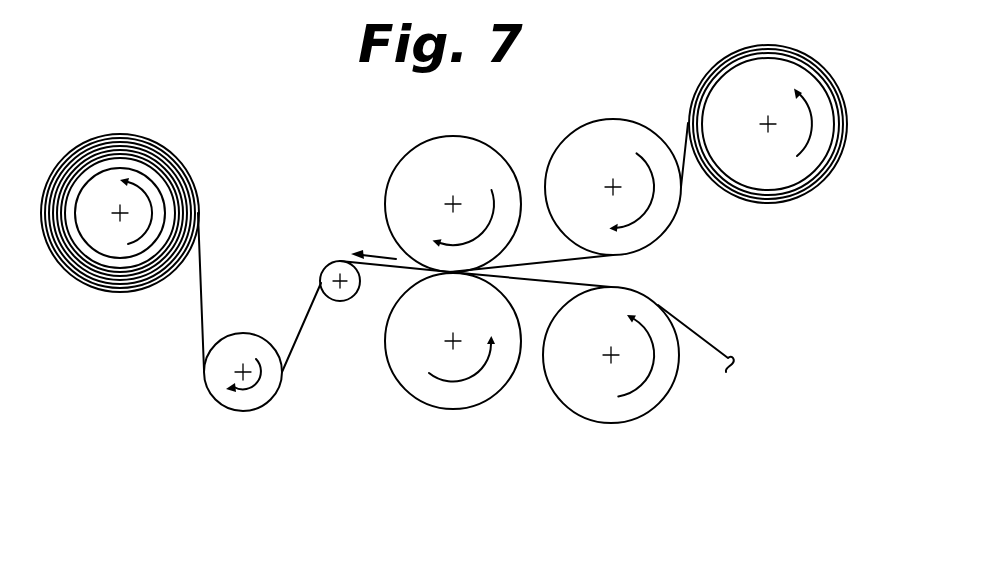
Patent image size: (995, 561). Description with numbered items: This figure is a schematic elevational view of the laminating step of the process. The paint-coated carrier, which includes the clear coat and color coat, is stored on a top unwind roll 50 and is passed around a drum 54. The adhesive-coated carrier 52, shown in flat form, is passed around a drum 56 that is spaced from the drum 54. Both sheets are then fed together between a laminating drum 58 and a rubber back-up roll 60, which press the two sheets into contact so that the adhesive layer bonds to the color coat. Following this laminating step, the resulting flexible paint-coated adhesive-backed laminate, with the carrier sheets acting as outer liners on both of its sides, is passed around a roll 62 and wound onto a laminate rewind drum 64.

The top unwind roll 50 is at (795, 78).
The adhesive-coated carrier 52 is at (702, 332).
The drum 54 is at (627, 133).
The drum 56 is at (577, 402).
The laminating drum 58 is at (470, 155).
The rubber back-up roll 60 is at (442, 395).
The roll 62 is at (240, 345).
The laminate rewind drum 64 is at (138, 152).